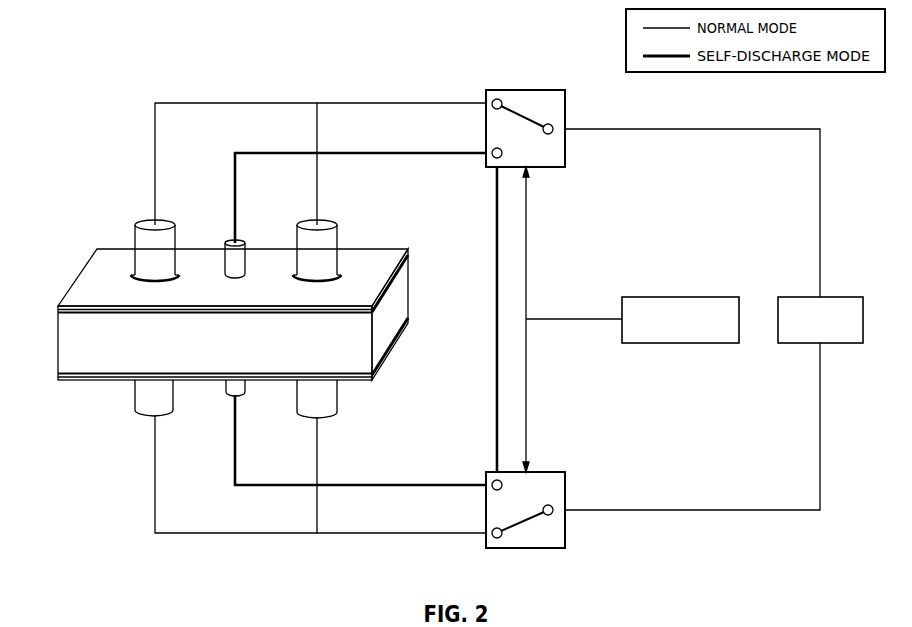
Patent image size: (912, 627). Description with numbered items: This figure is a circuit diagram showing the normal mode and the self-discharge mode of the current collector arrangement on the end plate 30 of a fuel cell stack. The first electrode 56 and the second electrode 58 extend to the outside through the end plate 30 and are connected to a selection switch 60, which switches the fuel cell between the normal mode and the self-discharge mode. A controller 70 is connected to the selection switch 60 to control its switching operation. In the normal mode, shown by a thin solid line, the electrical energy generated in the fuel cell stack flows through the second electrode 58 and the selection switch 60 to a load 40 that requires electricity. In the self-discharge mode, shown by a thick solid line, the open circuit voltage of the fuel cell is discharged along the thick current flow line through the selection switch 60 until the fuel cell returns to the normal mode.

The end plate 30 is at (92, 270).
The load 40 is at (800, 297).
The first electrode 56 is at (232, 243).
The second electrode 58 is at (140, 225).
The selection switch 60 is at (527, 90).
The controller 70 is at (660, 297).